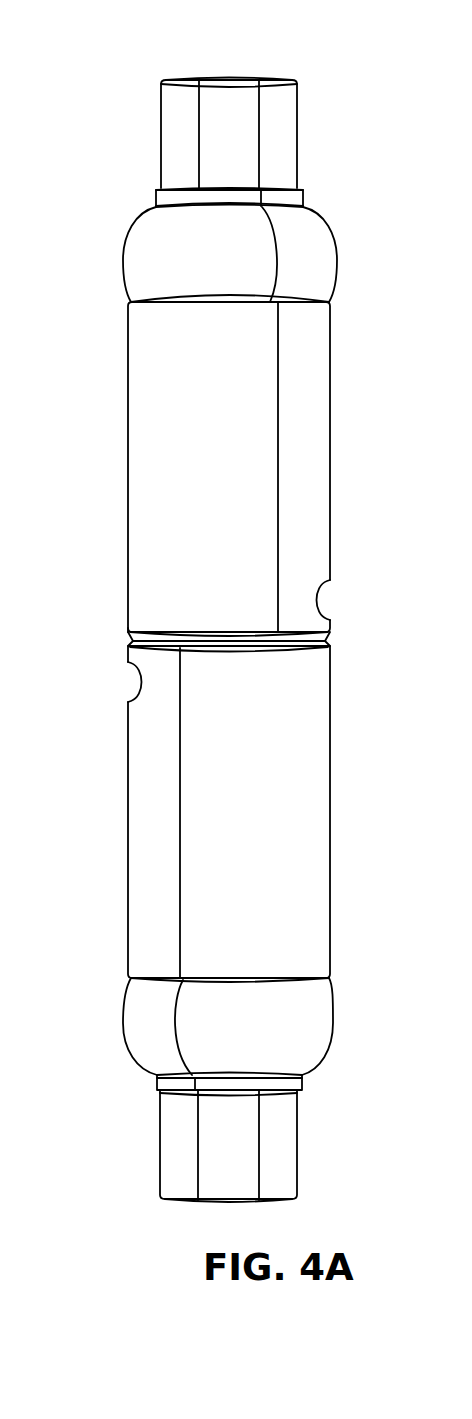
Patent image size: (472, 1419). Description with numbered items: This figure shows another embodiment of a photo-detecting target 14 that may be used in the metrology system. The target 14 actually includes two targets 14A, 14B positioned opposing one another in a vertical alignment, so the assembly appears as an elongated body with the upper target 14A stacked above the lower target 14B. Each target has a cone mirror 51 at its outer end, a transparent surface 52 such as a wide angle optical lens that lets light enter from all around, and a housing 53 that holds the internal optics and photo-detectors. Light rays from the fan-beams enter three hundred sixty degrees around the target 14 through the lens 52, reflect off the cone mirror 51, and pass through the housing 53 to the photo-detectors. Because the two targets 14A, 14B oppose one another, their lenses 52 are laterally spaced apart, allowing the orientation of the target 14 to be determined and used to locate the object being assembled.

The photo-detecting target 14 is at (105, 856).
The target 14A is at (330, 362).
The target 14B is at (330, 688).
The cone mirror 51 is at (277, 78).
The transparent surface 52 is at (123, 259).
The housing 53 is at (137, 493).